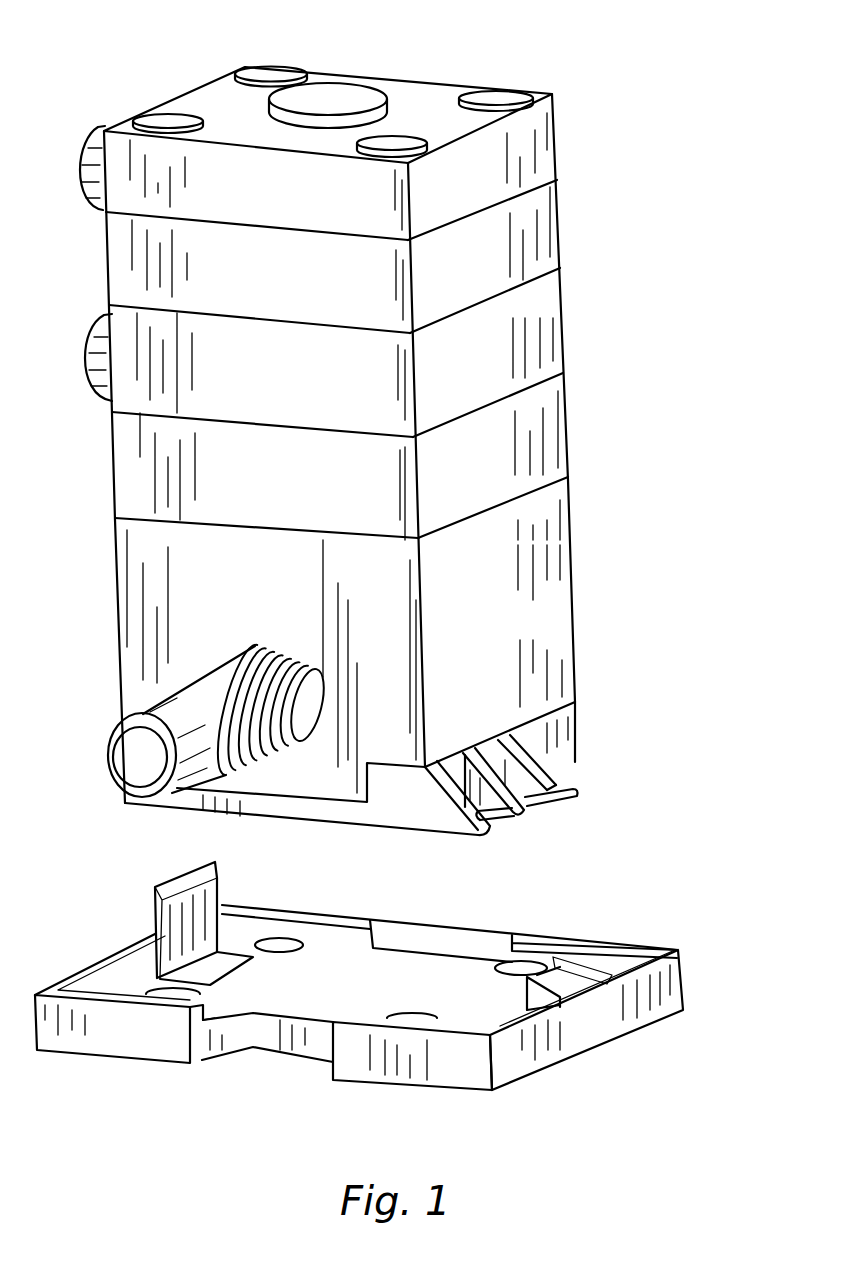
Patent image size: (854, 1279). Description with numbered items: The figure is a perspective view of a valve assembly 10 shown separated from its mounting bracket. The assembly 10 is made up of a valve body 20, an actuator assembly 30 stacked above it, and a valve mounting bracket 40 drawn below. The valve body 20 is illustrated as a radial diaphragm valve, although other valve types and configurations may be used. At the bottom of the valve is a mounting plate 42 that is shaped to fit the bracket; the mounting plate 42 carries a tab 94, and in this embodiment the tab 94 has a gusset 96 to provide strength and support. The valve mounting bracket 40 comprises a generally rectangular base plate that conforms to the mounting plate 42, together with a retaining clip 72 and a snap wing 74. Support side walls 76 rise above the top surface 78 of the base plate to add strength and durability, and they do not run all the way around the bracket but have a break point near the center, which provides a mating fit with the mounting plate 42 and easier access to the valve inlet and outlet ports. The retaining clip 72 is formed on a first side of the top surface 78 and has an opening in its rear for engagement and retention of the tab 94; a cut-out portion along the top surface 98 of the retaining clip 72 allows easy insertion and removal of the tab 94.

The valve assembly 10 is at (612, 77).
The valve body 20 is at (503, 566).
The actuator assembly 30 is at (523, 232).
The valve mounting bracket 40 is at (413, 1047).
The mounting plate 42 is at (163, 808).
The retaining clip 72 is at (523, 993).
The snap wing 74 is at (170, 927).
The support side walls 76 is at (125, 1048).
The top surface 78 is at (337, 970).
The tab 94 is at (578, 773).
The gusset 96 is at (547, 757).
The top surface 98 is at (587, 967).